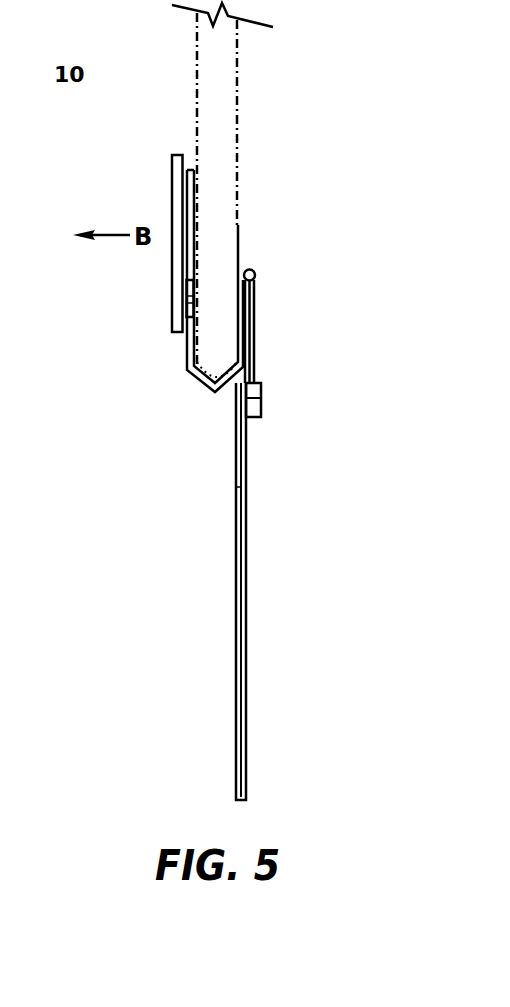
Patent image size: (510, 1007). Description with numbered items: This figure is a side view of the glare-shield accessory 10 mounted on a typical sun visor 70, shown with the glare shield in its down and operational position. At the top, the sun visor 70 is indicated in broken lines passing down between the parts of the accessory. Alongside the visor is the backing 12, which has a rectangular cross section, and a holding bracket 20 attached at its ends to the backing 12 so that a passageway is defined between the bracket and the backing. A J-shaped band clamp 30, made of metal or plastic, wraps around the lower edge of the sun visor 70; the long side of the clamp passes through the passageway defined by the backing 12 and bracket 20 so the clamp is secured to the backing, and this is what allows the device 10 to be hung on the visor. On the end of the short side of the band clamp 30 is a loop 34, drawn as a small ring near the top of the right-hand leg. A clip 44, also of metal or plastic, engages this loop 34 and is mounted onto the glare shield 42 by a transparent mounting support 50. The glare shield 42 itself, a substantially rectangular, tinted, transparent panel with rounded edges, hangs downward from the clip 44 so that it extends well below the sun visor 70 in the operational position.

The accessory 10 is at (88, 72).
The backing 12 is at (173, 195).
The holding bracket 20 is at (186, 300).
The J-shaped band clamp 30 is at (200, 385).
The loop 34 is at (248, 258).
The glare shield 42 is at (236, 675).
The clip 44 is at (255, 318).
The mounting support 50 is at (262, 402).
The sun visor 70 is at (237, 62).